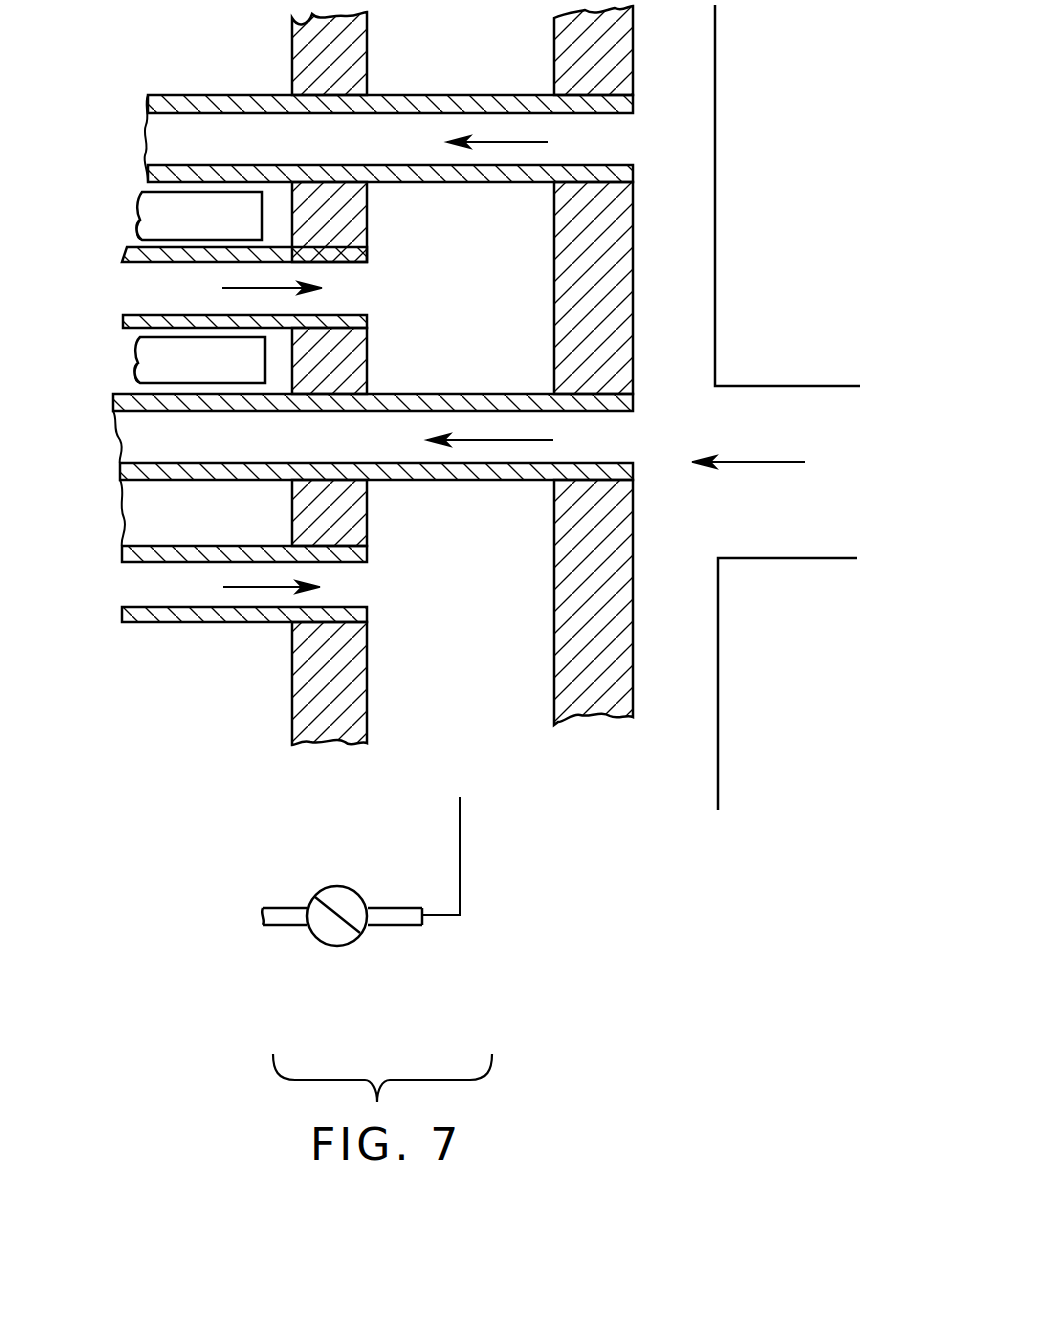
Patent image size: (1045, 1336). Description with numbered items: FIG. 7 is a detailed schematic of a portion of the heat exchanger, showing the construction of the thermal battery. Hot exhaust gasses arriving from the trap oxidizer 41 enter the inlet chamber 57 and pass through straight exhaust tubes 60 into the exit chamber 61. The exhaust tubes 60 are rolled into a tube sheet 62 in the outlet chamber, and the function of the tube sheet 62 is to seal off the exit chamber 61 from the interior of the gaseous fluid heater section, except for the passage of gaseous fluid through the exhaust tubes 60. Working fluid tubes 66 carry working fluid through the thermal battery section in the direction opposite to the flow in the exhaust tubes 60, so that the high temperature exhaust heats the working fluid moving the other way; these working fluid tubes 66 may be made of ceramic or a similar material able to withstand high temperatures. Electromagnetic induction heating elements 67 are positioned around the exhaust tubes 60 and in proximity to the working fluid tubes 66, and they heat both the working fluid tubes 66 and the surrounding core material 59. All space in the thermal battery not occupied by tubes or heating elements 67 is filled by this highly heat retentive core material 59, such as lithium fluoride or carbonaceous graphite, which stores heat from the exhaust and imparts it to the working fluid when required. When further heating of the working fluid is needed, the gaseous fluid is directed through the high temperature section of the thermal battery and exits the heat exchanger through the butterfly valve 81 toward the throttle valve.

The trap oxidizer 41 is at (779, 407).
The inlet chamber 57 is at (618, 325).
The core material 59 is at (190, 582).
The exhaust tubes 60 is at (157, 142).
The exit chamber 61 is at (353, 702).
The tube sheet 62 is at (634, 360).
The working fluid tubes 66 is at (135, 291).
The electromagnetic induction heating elements 67 is at (240, 228).
The butterfly valve 81 is at (342, 990).